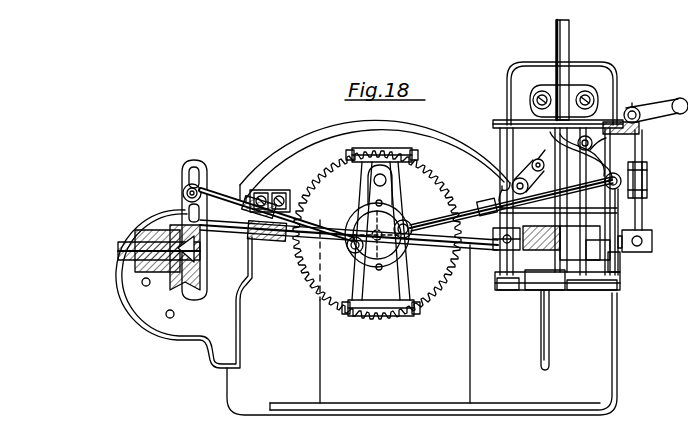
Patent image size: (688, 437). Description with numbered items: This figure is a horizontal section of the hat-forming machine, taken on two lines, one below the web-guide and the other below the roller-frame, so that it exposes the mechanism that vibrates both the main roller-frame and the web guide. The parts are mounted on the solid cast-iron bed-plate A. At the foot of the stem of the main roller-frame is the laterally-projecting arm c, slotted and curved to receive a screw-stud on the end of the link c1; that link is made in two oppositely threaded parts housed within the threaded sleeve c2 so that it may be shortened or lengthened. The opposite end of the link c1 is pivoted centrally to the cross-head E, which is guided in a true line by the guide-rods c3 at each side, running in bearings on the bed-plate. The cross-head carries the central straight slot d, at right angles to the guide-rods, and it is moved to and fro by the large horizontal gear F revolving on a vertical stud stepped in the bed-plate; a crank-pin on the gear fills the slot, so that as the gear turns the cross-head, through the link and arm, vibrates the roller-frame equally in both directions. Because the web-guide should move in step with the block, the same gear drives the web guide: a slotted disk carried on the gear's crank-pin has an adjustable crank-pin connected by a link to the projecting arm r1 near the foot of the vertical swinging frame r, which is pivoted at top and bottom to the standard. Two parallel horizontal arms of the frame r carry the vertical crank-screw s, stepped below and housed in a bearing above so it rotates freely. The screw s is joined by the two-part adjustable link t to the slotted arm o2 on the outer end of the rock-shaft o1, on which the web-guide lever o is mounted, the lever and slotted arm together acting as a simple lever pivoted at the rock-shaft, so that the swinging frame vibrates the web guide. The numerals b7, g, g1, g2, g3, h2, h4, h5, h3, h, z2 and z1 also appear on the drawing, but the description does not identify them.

The bed-plate A is at (369, 217).
The laterally-projecting arm c is at (194, 224).
The link c1 is at (282, 214).
The threaded sleeve c2 is at (266, 204).
The guide-rods c3 is at (349, 239).
The shaft b7 is at (200, 253).
The large horizontal gear F is at (377, 235).
The central straight slot d is at (381, 232).
The cross-head E is at (374, 185).
The hub disk g is at (377, 223).
The pin g1 is at (379, 259).
The connecting rod g2 is at (503, 207).
The rod block g3 is at (484, 205).
The link h2 is at (536, 176).
The arm h4 is at (545, 148).
The bracket h5 is at (502, 183).
The vertical swinging frame r is at (581, 156).
The projecting arm r1 is at (600, 150).
The lever pivot h3 is at (602, 224).
The hand lever h is at (650, 110).
The vertical crank-screw s is at (636, 97).
The bracket z2 is at (640, 126).
The link t is at (639, 180).
The boss z1 is at (652, 240).
The rock-shaft o1 is at (622, 285).
The slotted arm o2 is at (620, 263).
The web-guide lever o is at (550, 330).